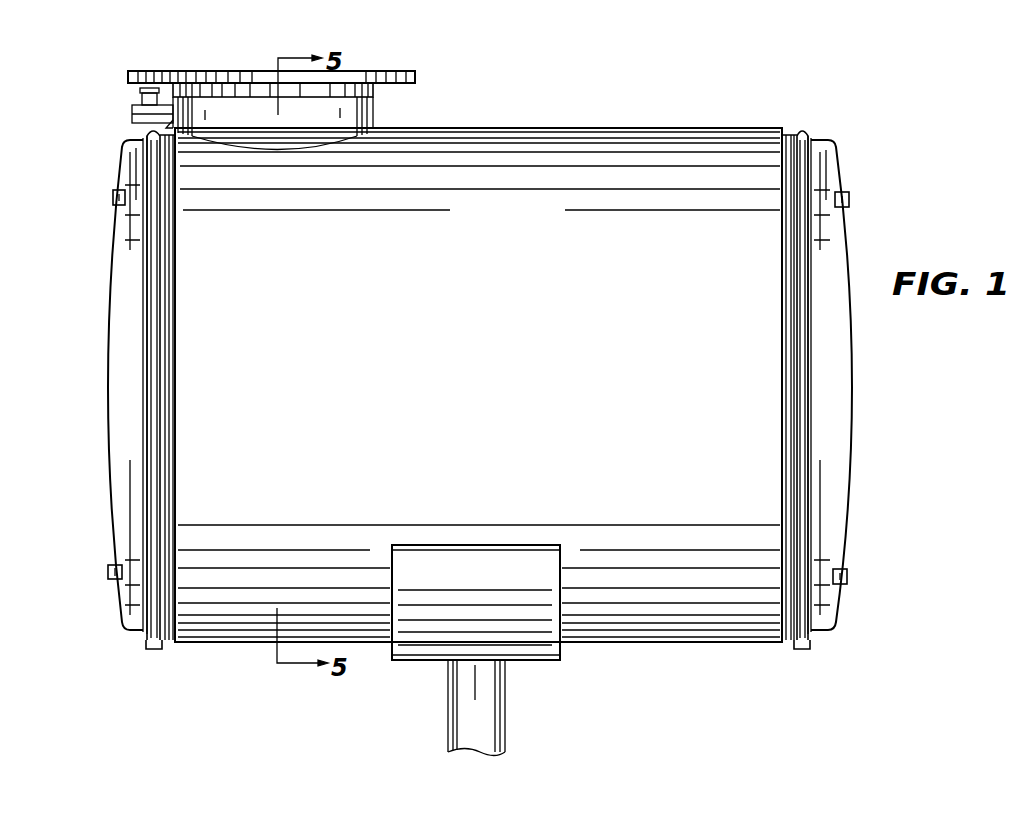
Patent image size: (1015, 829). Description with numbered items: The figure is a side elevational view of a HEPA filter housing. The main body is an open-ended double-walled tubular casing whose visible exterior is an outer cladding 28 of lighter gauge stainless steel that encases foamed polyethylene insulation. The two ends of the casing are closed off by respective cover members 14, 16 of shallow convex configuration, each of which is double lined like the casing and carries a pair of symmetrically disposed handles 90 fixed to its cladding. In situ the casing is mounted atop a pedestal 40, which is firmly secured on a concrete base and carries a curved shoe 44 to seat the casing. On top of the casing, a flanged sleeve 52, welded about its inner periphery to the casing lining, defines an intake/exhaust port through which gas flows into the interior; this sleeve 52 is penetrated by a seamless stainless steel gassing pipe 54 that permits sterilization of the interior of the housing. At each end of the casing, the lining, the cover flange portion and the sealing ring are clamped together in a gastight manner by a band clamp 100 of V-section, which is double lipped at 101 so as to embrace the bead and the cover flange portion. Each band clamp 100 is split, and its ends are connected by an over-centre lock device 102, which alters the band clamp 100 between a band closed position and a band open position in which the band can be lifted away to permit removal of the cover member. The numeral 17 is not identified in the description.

The cover member 14 is at (115, 238).
The cover member 16 is at (862, 402).
The tank shell 17 is at (403, 327).
The outer cladding 28 is at (637, 128).
The pedestal 40 is at (457, 708).
The curved shoe 44 is at (410, 642).
The flanged sleeve 52 is at (380, 110).
The gassing pipe 54 is at (132, 112).
The handles 90 is at (112, 197).
The band clamp 100 is at (143, 269).
The double lip 101 is at (815, 124).
The over-centre lock device 102 is at (152, 652).